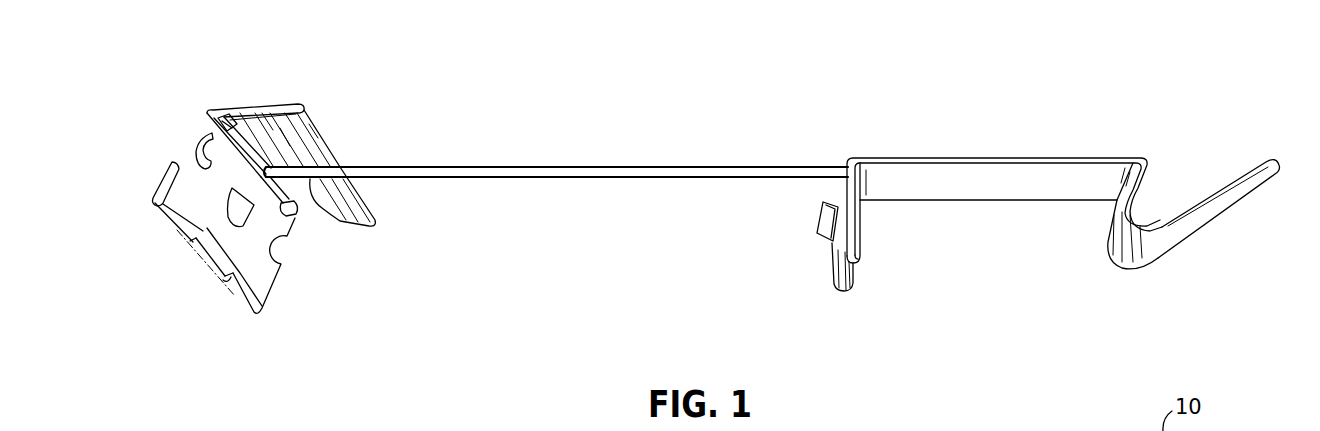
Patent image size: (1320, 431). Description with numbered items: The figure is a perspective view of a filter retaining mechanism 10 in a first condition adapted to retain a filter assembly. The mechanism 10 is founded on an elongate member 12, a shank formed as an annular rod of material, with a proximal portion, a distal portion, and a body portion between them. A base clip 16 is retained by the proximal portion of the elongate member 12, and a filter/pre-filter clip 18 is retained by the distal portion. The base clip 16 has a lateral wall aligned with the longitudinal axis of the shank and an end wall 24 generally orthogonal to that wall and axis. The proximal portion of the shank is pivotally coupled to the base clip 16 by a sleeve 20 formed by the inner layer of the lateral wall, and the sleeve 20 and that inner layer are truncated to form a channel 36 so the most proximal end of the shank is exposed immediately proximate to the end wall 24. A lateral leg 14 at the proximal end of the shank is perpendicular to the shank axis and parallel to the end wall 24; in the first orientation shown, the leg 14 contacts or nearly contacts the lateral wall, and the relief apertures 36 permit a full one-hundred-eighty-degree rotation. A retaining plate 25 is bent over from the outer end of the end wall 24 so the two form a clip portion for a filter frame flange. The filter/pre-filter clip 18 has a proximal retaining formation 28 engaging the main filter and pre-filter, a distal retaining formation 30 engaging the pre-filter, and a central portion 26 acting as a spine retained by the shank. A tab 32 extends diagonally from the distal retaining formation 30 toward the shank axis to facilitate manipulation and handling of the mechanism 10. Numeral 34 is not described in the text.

The filter retaining mechanism 10 is at (1138, 109).
The elongate member 12 is at (614, 172).
The lateral leg 14 is at (200, 132).
The base clip 16 is at (334, 109).
The filter/pre-filter clip 18 is at (1020, 110).
The sleeve 20 is at (343, 217).
The end wall 24 is at (162, 227).
The retaining plate 25 is at (171, 163).
The central portion 26 is at (973, 195).
The proximal retaining formation 28 is at (828, 245).
The distal retaining formation 30 is at (1110, 246).
The tab 32 is at (266, 104).
The clip 34 is at (285, 213).
The relief aperture 36 is at (216, 112).